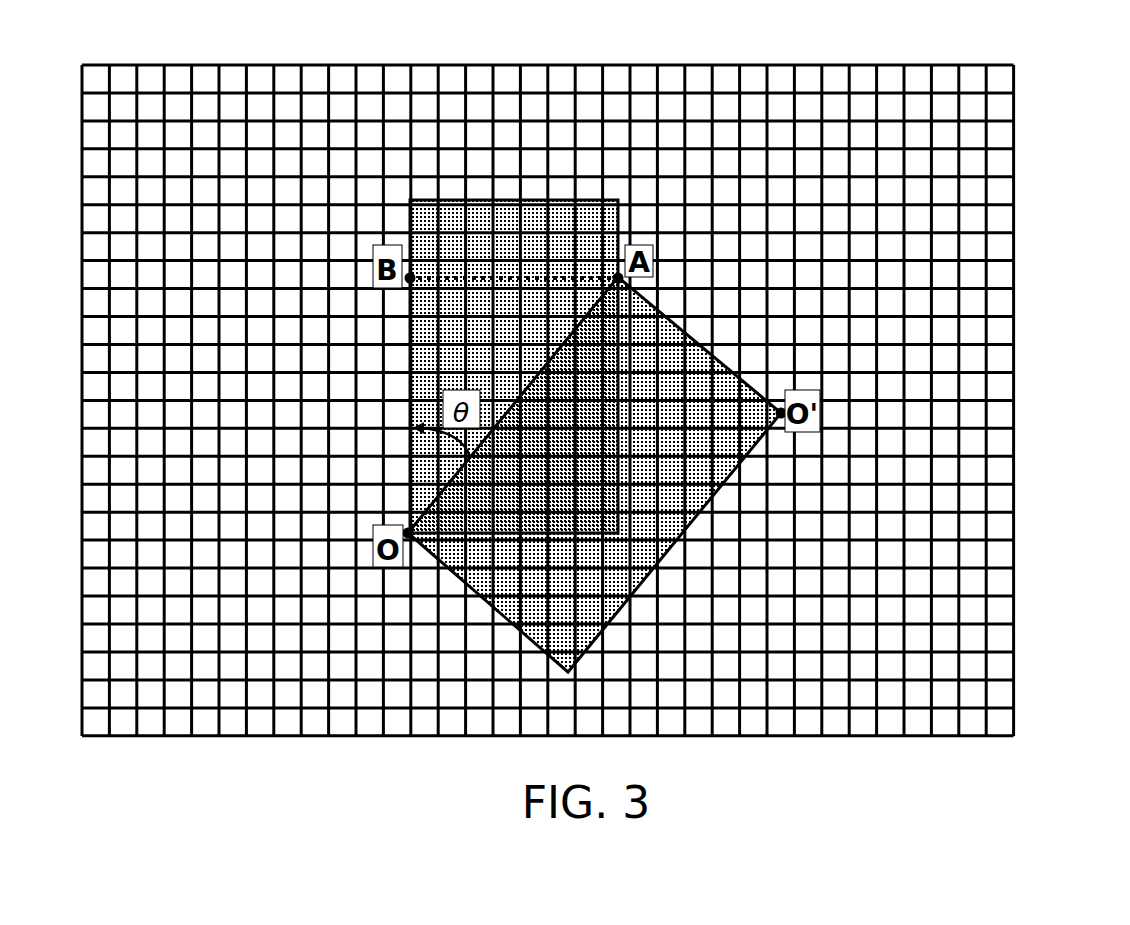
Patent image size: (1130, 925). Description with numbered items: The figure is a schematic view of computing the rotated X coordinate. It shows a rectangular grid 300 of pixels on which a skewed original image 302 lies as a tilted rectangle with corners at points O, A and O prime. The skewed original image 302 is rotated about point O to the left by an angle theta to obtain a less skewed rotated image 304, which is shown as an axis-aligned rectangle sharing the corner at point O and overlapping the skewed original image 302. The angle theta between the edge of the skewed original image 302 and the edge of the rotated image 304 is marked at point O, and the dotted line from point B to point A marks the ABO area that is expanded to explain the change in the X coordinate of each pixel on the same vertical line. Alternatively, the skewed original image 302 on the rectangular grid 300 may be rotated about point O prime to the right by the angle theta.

The rectangular grid 300 is at (968, 230).
The skewed original image 302 is at (656, 537).
The rotated image 304 is at (428, 365).